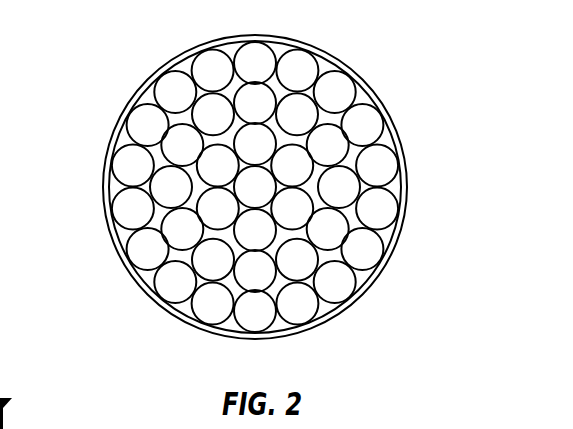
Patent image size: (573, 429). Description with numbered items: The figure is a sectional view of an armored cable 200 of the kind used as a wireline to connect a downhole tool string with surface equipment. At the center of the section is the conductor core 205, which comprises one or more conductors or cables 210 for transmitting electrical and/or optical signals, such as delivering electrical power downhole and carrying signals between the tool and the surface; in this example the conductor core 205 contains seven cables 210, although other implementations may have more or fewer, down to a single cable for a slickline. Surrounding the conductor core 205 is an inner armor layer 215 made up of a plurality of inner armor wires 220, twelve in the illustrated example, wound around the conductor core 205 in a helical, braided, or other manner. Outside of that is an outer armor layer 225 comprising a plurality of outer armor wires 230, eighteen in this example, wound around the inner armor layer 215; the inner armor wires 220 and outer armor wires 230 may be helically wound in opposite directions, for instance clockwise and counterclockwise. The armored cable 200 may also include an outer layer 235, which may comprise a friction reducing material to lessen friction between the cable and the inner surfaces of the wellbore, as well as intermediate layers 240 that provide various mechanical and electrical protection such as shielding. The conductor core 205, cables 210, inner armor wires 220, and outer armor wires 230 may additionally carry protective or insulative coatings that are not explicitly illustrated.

The armored cable 200 is at (70, 43).
The conductor core 205 is at (316, 283).
The cables 210 is at (353, 238).
The inner armor layer 215 is at (328, 147).
The inner armor wires 220 is at (362, 127).
The outer armor layer 225 is at (281, 42).
The outer armor wires 230 is at (342, 96).
The outer layer 235 is at (175, 315).
The intermediate layers 240 is at (150, 162).